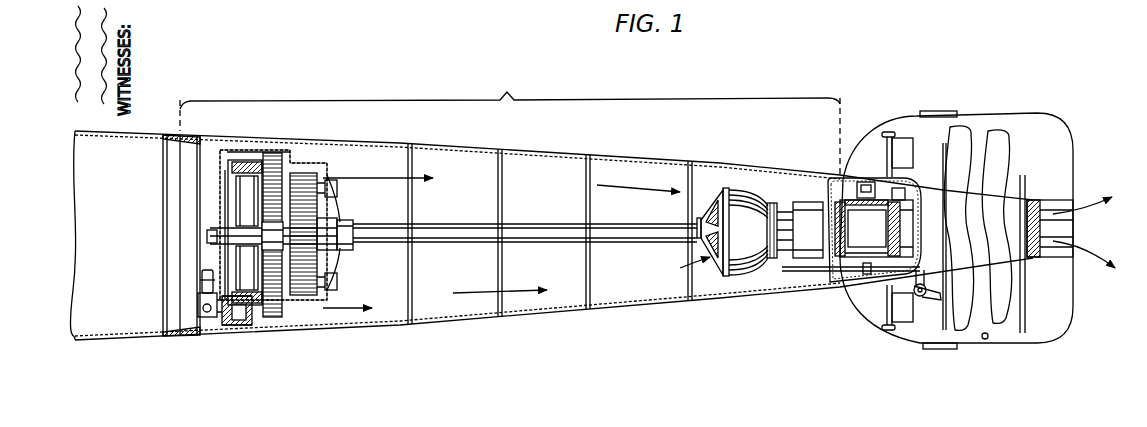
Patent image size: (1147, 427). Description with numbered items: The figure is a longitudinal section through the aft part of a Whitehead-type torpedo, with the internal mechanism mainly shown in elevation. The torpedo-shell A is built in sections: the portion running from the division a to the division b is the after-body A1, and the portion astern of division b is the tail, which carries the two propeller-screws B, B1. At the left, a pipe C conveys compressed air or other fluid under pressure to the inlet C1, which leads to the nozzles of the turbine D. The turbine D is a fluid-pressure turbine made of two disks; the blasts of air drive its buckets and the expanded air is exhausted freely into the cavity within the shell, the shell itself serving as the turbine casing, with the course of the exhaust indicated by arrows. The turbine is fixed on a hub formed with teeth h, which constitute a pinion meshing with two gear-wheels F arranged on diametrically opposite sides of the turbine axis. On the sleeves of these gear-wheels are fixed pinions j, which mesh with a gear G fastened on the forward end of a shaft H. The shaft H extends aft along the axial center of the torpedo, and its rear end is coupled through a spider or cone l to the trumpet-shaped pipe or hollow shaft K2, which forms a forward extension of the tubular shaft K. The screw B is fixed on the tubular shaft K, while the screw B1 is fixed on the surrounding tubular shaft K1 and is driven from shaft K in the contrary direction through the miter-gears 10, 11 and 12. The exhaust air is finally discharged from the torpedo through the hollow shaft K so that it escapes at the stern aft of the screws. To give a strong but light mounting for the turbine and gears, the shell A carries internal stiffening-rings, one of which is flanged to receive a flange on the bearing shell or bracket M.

The division a is at (179, 105).
The division b is at (846, 122).
The torpedo-shell A is at (551, 244).
The after-body A1 is at (510, 82).
The propeller-screw B is at (1003, 324).
The propeller-screw B1 is at (967, 330).
The pipe C is at (205, 280).
The inlet C1 is at (205, 308).
The turbine D is at (240, 202).
The gear-wheel F is at (268, 153).
The gear G is at (312, 213).
The pinion h is at (272, 236).
The shaft H is at (462, 225).
The pinion j is at (313, 172).
The tubular shaft K is at (1046, 280).
The tubular shaft K1 is at (908, 238).
The pipe or hollow shaft K2 is at (758, 262).
The spider or cone l is at (720, 217).
The bearing shell or bracket M is at (318, 303).
The neck v is at (780, 218).
The miter-gear 10 is at (835, 235).
The miter-gear 11 is at (890, 194).
The miter-gear 12 is at (893, 220).